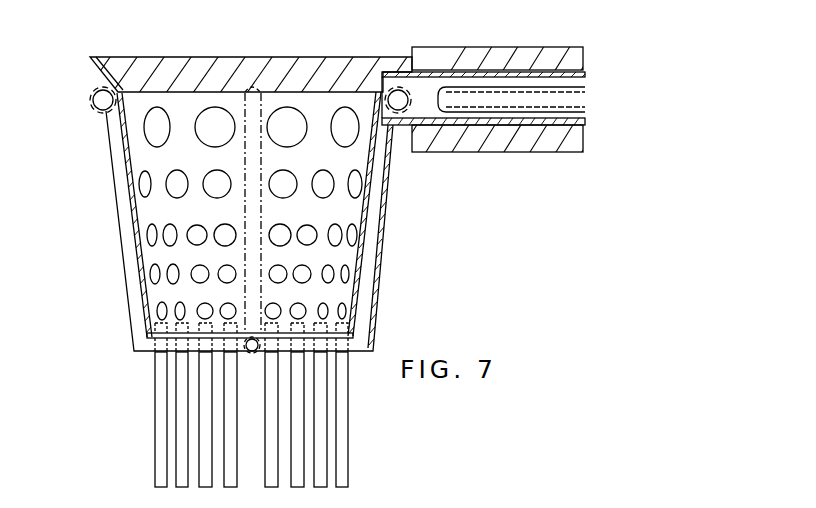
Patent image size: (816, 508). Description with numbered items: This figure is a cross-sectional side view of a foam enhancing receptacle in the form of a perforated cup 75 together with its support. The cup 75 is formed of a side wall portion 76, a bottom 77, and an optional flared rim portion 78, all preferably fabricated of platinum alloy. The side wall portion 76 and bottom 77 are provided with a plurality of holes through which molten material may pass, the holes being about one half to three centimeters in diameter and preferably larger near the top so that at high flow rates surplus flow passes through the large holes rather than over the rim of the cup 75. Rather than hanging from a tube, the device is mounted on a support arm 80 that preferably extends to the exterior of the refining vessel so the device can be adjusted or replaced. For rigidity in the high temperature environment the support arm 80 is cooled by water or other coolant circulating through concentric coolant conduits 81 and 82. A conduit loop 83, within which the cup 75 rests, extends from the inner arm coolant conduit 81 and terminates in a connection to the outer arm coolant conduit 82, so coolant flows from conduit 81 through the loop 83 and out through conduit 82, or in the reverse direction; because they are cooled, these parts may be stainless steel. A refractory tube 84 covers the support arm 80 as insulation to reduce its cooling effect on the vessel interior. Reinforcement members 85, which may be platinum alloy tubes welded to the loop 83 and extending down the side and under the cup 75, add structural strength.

The perforated cup 75 is at (207, 43).
The side wall portion 76 is at (140, 217).
The bottom 77 is at (178, 338).
The flared rim portion 78 is at (112, 72).
The support arm 80 is at (492, 40).
The inner arm coolant conduit 81 is at (585, 84).
The outer arm coolant conduit 82 is at (585, 121).
The conduit loop 83 is at (90, 99).
The refractory tube 84 is at (508, 153).
The reinforcement members 85 is at (262, 92).